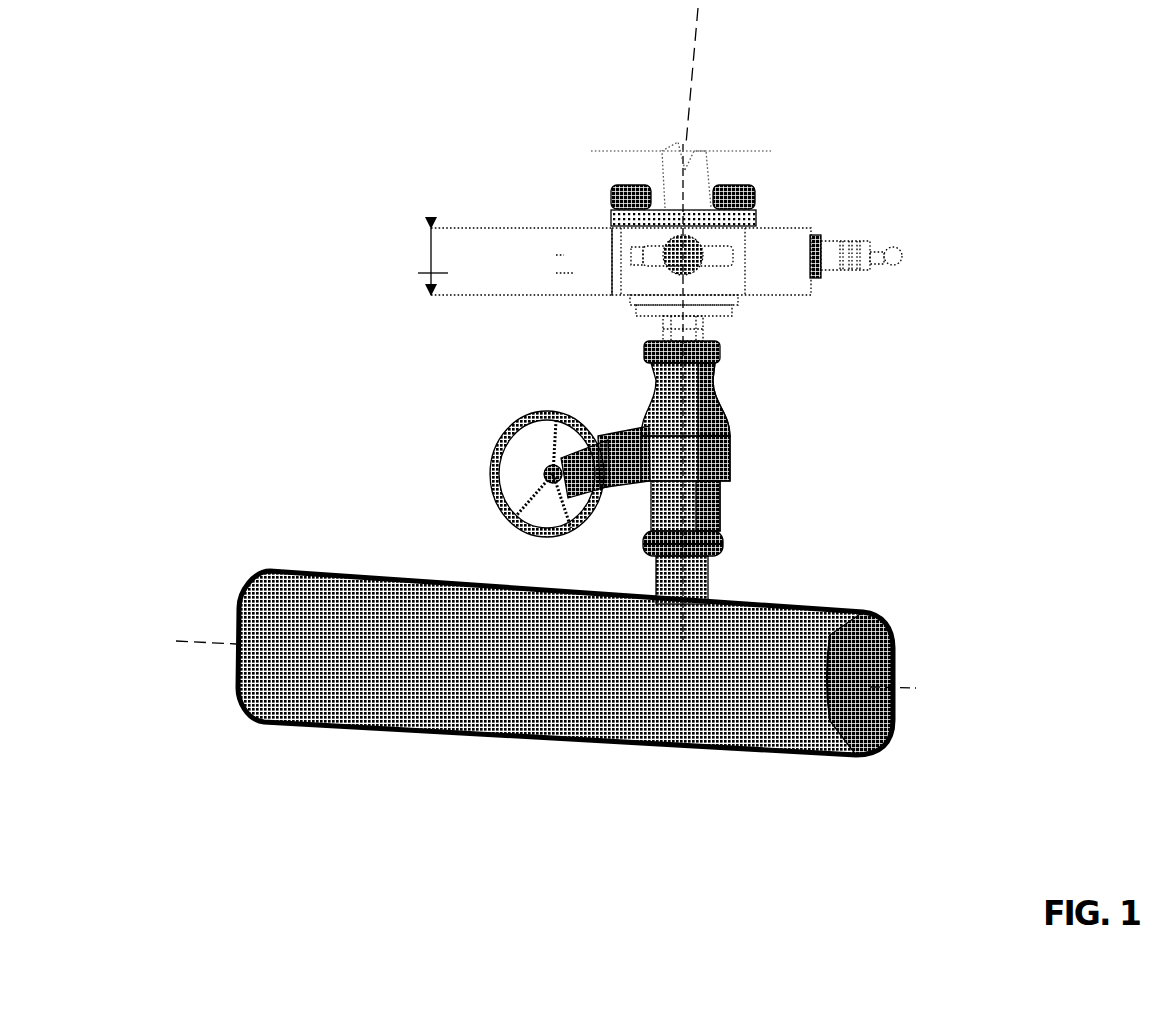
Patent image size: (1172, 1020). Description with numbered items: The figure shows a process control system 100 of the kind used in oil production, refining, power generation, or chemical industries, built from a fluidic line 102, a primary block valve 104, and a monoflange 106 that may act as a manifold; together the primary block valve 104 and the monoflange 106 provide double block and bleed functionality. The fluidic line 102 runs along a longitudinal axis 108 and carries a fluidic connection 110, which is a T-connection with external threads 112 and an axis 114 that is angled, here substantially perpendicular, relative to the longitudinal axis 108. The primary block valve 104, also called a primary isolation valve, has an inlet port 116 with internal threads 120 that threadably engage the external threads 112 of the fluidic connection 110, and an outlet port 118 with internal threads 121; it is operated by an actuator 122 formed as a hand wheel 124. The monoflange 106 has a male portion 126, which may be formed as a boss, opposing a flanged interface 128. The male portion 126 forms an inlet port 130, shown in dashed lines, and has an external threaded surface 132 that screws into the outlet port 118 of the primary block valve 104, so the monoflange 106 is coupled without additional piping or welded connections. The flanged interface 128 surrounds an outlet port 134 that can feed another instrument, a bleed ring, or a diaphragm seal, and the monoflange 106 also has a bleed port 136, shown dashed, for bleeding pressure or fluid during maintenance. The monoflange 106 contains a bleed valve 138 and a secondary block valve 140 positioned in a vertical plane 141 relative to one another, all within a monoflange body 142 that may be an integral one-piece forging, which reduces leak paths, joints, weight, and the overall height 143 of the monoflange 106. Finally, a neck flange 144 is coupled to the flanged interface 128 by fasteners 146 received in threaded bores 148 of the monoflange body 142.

The process control system 100 is at (886, 214).
The fluidic line 102 is at (855, 604).
The primary block valve 104 is at (705, 435).
The monoflange 106 is at (800, 287).
The longitudinal axis 108 is at (896, 680).
The fluidic connection 110 is at (690, 580).
The external threads 112 is at (650, 548).
The axis 114 is at (675, 596).
The inlet port 116 is at (700, 503).
The outlet port 118 is at (700, 378).
The internal threads 120 is at (695, 548).
The internal threads 121 is at (640, 340).
The actuator 122 is at (485, 455).
The hand wheel 124 is at (522, 402).
The male portion 126 is at (655, 322).
The flanged interface 128 is at (606, 210).
The inlet port 130 is at (695, 328).
The external threaded surface 132 is at (695, 318).
The outlet port 134 is at (688, 214).
The bleed port 136 is at (548, 248).
The bleed valve 138 is at (622, 262).
The secondary block valve 140 is at (866, 257).
The vertical plane 141 is at (686, 68).
The monoflange body 142 is at (565, 270).
The overall height 143 is at (510, 261).
The neck flange 144 is at (657, 172).
The fasteners 146 is at (738, 190).
The threaded bores 148 is at (612, 200).